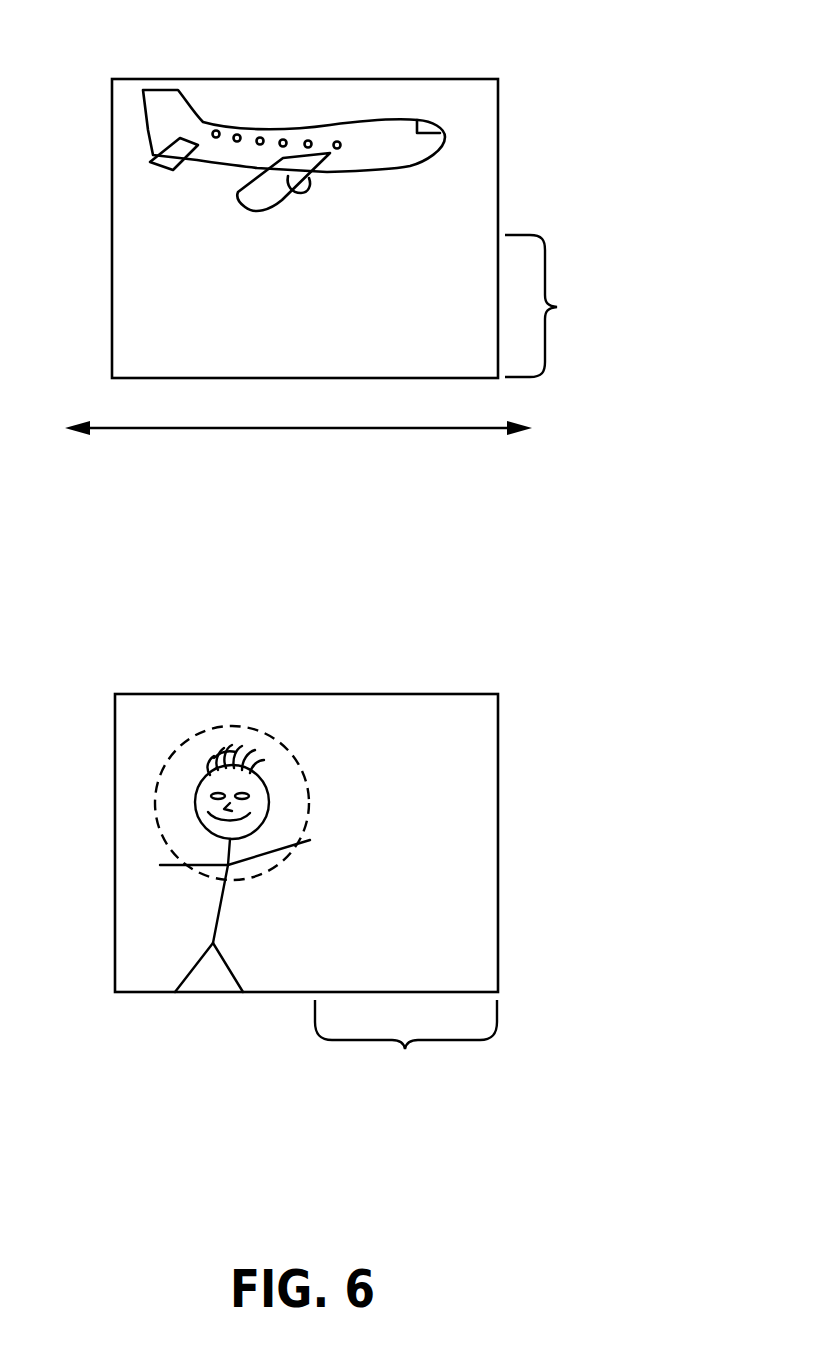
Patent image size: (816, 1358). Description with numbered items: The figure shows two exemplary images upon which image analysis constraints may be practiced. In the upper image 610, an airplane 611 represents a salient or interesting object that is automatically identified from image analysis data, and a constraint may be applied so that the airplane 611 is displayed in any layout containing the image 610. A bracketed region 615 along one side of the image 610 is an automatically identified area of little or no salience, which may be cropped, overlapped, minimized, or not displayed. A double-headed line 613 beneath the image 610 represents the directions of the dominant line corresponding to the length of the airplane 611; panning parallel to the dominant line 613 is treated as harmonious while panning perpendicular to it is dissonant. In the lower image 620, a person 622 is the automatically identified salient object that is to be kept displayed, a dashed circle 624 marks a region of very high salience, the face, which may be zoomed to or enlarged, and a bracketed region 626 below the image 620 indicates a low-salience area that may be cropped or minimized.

The image 610 is at (410, 79).
The airplane 611 is at (380, 170).
The dominant line 613 is at (333, 429).
The region 615 is at (557, 307).
The image 620 is at (373, 694).
The person 622 is at (222, 917).
The dashed circle 624 is at (153, 802).
The region 626 is at (405, 1049).